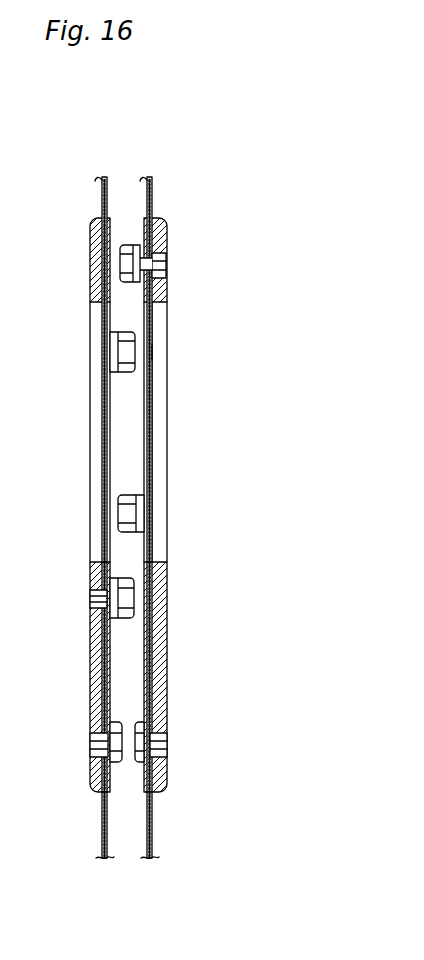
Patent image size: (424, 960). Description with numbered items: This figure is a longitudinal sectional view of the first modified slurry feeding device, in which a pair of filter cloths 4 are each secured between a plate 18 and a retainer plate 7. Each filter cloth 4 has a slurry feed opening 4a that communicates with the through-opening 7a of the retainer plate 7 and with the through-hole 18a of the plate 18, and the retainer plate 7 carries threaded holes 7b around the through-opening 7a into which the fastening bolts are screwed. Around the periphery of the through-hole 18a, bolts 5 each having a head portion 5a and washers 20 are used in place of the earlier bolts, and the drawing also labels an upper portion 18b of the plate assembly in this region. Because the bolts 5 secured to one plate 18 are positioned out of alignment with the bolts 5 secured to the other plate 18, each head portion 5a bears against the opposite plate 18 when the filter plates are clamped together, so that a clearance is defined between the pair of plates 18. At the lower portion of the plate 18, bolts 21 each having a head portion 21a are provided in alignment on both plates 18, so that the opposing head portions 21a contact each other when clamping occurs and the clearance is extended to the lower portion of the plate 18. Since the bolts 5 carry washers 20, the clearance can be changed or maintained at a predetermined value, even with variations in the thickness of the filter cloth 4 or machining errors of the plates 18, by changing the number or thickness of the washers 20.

The filter cloth 4 is at (100, 198).
The slurry feed opening 4a is at (157, 410).
The bolt 5 is at (128, 244).
The head portion 5a is at (153, 352).
The retainer plate 7 is at (88, 745).
The through-opening 7a is at (157, 332).
The threaded hole 7b is at (167, 242).
The plate 18 is at (144, 645).
The through-hole 18a is at (160, 450).
The upper spacer block 18b is at (165, 282).
The washer 20 is at (108, 333).
The bolt 21 is at (100, 812).
The head portion 21a is at (90, 752).